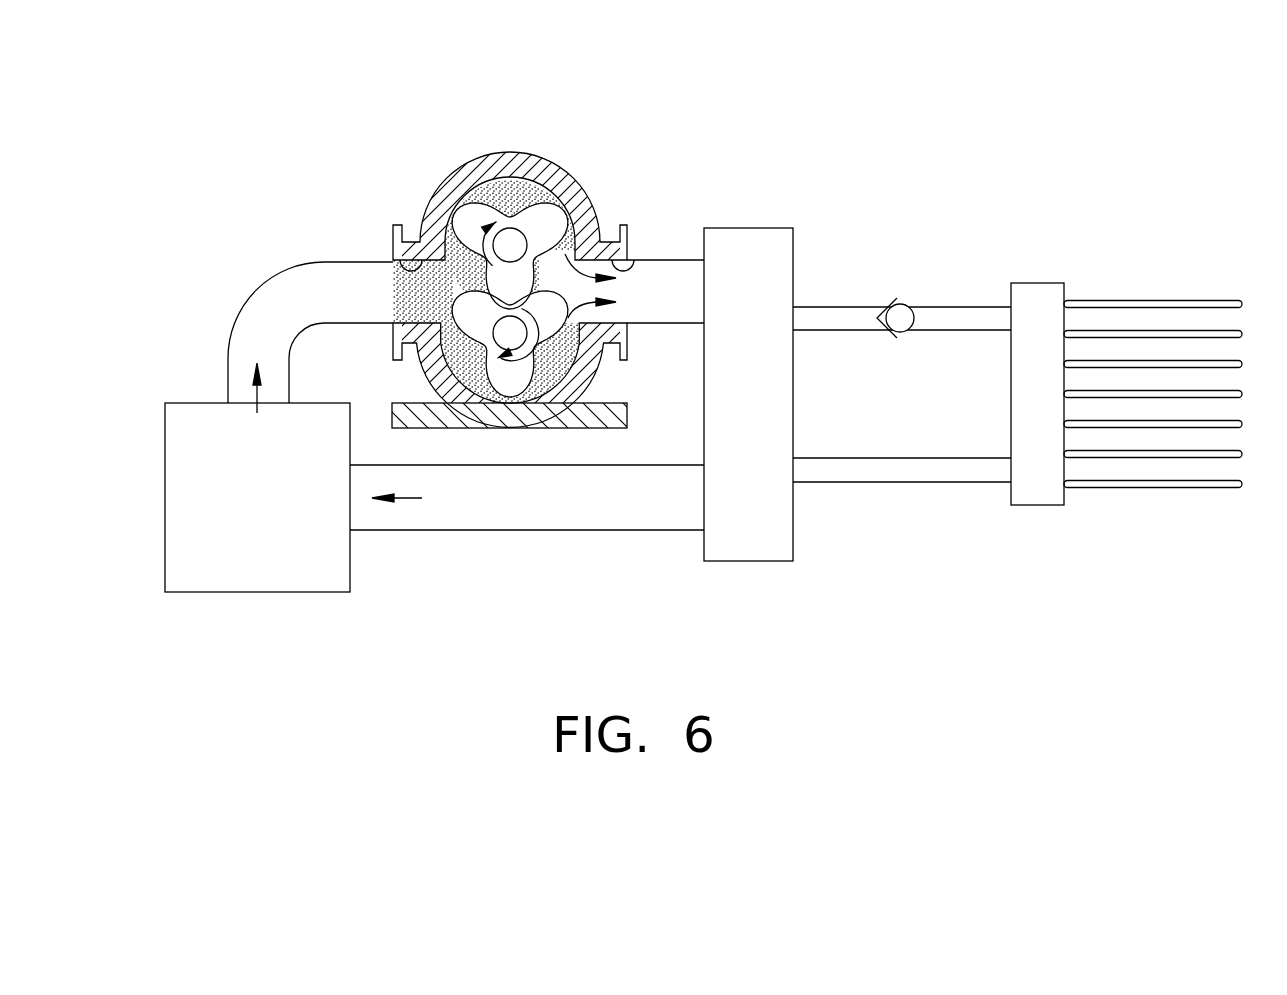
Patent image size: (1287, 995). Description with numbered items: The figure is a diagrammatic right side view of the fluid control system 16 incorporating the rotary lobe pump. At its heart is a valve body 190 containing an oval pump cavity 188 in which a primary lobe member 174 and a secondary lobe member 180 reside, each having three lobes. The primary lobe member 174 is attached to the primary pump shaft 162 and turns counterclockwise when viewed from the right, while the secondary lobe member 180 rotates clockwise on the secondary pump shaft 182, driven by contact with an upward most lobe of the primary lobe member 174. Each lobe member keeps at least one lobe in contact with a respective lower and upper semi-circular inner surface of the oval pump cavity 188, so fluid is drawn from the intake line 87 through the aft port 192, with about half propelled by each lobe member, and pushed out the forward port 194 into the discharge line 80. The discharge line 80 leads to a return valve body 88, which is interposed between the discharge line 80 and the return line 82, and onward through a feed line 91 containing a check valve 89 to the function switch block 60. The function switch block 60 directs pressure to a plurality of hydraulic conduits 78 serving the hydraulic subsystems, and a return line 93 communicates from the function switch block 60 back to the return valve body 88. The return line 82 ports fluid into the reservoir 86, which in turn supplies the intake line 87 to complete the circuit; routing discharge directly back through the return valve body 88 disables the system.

The fluid control system 16 is at (652, 113).
The function switch block 60 is at (1035, 283).
The hydraulic conduits 78 is at (1149, 507).
The discharge line 80 is at (677, 259).
The return line 82 is at (539, 530).
The reservoir 86 is at (317, 593).
The intake line 87 is at (281, 272).
The return valve body 88 is at (780, 228).
The check valve 89 is at (910, 290).
The feed line 91 is at (933, 306).
The return line 93 is at (894, 483).
The primary pump shaft 162 is at (512, 342).
The primary lobe member 174 is at (543, 329).
The secondary lobe member 180 is at (510, 243).
The secondary pump shaft 182 is at (508, 215).
The oval pump cavity 188 is at (466, 352).
The valve body 190 is at (548, 224).
The aft port 192 is at (397, 243).
The forward port 194 is at (633, 252).